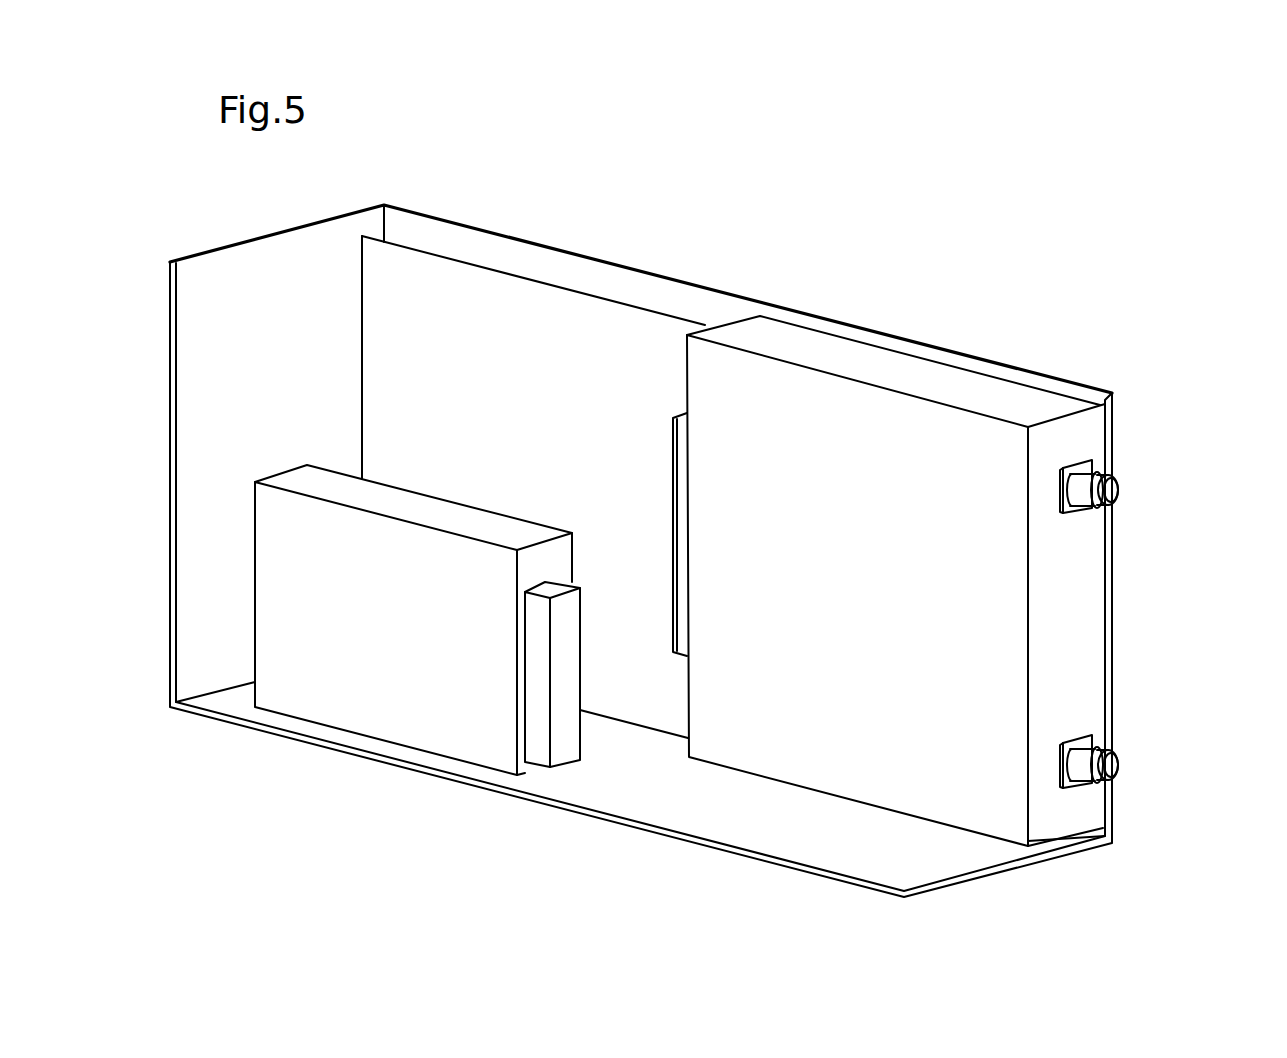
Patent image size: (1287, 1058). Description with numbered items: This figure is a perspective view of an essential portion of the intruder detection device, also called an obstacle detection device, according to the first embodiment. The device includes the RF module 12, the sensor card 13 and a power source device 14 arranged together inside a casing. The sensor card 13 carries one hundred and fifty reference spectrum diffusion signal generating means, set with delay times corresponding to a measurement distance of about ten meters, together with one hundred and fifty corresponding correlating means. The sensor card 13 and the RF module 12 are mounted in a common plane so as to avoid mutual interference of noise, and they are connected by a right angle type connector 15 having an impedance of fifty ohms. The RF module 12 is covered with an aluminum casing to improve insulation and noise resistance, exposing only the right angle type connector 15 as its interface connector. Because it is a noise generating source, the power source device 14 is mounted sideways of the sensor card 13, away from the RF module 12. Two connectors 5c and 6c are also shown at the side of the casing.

The sensor card 13 is at (537, 279).
The RF module 12 is at (885, 362).
The right angle type connector 15 is at (680, 478).
The power source device 14 is at (270, 692).
The connector 5c is at (1113, 479).
The connector 6c is at (1117, 757).